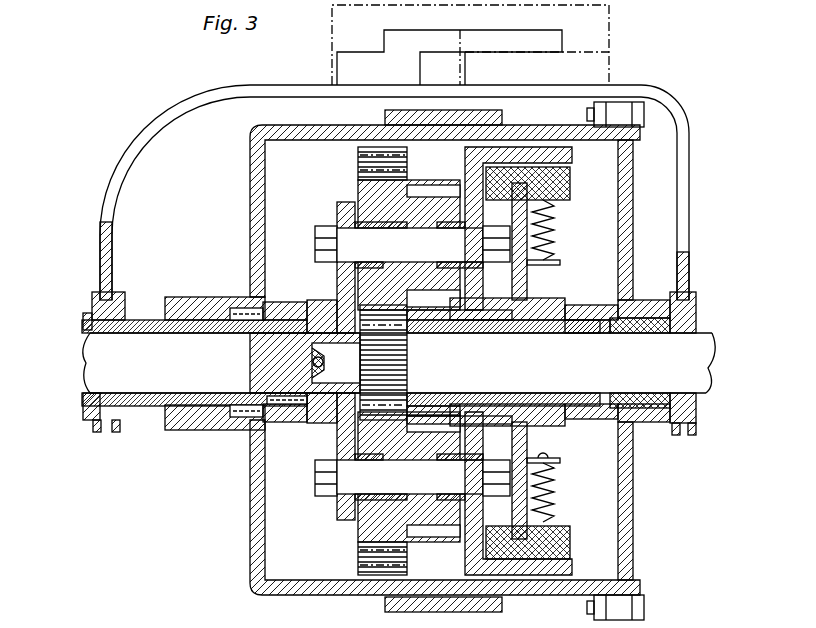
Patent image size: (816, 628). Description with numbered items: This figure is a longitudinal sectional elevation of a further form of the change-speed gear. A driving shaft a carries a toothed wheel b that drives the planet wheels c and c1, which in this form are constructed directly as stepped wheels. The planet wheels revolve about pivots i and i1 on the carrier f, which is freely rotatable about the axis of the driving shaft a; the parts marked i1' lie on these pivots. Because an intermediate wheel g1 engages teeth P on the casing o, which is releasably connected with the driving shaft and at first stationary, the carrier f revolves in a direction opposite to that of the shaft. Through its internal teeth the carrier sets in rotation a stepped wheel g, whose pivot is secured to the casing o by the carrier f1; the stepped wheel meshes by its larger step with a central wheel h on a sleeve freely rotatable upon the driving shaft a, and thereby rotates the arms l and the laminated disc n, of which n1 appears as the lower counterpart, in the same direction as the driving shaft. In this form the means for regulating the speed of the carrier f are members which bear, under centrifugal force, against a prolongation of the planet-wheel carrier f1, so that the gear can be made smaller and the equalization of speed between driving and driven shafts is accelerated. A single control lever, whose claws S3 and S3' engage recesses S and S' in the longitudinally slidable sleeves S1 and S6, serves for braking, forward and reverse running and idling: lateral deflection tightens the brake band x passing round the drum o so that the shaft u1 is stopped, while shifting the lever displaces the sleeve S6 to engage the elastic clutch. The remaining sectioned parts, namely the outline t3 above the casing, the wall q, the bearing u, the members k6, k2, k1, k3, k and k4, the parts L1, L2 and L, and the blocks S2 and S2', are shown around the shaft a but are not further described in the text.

The control lever bracket t3 is at (604, 40).
The longitudinally slidable sleeve S6 is at (569, 90).
The brake band x is at (505, 120).
The teeth P is at (372, 150).
The stepped wheel g is at (405, 163).
The planet wheel c is at (360, 192).
The pivot i is at (363, 235).
The washer i1' is at (419, 361).
The laminated disc n is at (566, 190).
The arm l is at (551, 230).
The casing o is at (250, 223).
The housing wall q is at (633, 222).
The claw S3 is at (120, 261).
The recess S is at (108, 351).
The longitudinally slidable sleeve S1 is at (137, 322).
The key k6 is at (235, 308).
The sleeve block S2 is at (277, 291).
The clip k2 is at (323, 313).
The carrier f is at (338, 282).
The carrier f1 is at (480, 284).
The lever bar k1 is at (538, 288).
The step L1 is at (566, 303).
The plate k3 is at (467, 331).
The claw S3' is at (699, 276).
The recess S' is at (695, 363).
The bearing u is at (336, 363).
The toothed wheel b is at (402, 371).
The plate k is at (492, 327).
The plate L2 is at (602, 328).
The plate k4 is at (656, 326).
The driving shaft a is at (702, 392).
The shaft u1 is at (147, 393).
The central wheel h is at (442, 417).
The sleeve block S2' is at (285, 427).
The pivot i1 is at (391, 497).
The planet wheel c1 is at (372, 537).
The intermediate wheel g1 is at (405, 560).
The lever bar L is at (520, 448).
The abutment block n1 is at (564, 553).